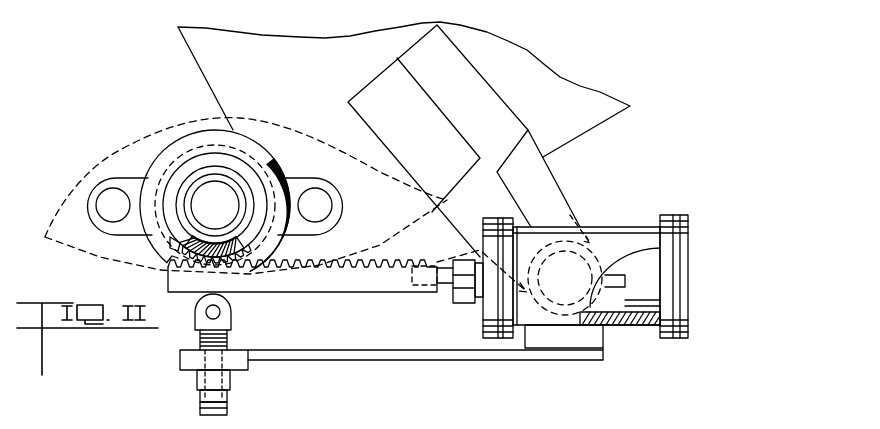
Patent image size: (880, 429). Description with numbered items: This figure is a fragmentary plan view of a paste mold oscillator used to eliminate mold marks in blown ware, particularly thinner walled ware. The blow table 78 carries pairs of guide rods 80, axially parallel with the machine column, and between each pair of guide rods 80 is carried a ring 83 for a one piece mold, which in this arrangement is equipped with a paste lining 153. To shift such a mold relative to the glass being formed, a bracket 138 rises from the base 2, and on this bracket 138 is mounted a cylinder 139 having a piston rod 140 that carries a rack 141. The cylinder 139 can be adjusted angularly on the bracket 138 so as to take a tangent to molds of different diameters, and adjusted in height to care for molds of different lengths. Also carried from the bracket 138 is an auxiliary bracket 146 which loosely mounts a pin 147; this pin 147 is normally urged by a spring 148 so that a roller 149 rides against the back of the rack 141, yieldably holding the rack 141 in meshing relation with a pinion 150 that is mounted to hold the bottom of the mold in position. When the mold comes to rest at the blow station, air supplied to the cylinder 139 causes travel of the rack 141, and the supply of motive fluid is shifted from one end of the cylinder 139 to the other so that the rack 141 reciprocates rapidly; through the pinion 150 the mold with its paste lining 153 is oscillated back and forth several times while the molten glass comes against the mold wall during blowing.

The base 2 is at (588, 134).
The blow table 78 is at (390, 235).
The guide rods 80 is at (358, 206).
The ring 83 is at (275, 170).
The bracket 138 is at (565, 205).
The cylinder 139 is at (627, 325).
The piston rod 140 is at (453, 285).
The rack 141 is at (290, 295).
The auxiliary bracket 146 is at (345, 360).
The pin 147 is at (227, 395).
The spring 148 is at (230, 343).
The roller 149 is at (232, 312).
The pinion 150 is at (172, 250).
The paste lining 153 is at (216, 238).